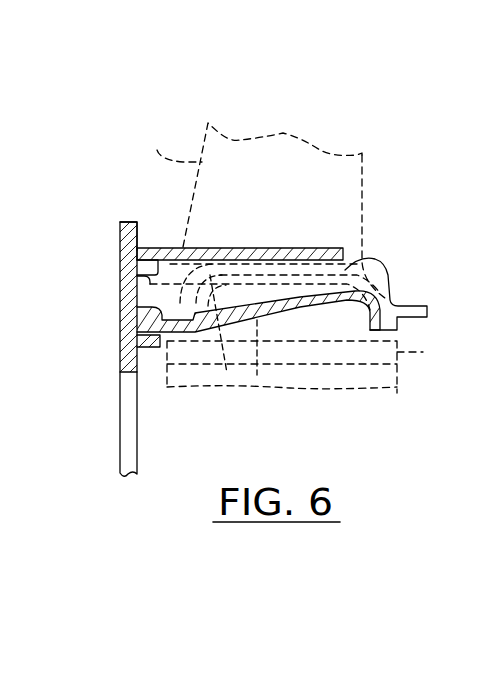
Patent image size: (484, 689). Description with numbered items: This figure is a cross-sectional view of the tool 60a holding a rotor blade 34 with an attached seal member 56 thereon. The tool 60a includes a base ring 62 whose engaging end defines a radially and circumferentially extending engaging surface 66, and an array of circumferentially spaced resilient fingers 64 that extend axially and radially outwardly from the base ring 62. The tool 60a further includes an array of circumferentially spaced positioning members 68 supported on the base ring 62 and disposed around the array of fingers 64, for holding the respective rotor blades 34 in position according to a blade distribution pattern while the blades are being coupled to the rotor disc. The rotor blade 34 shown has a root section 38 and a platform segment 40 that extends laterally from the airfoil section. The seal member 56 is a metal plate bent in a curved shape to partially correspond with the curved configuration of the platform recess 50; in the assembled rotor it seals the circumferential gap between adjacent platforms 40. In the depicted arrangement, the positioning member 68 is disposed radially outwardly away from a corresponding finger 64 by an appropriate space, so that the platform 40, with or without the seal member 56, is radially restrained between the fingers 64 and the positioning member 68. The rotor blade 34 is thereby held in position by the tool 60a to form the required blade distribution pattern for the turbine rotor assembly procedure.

The rotor blade 34 is at (157, 150).
The tool 60a is at (120, 242).
The base ring 62 is at (120, 278).
The engaging surface 66 is at (155, 260).
The positioning member 68 is at (311, 248).
The platform segment 40 is at (385, 265).
The root section 38 is at (423, 352).
The seal member 56 is at (228, 395).
The platform recess 50 is at (258, 383).
The resilient finger 64 is at (300, 300).